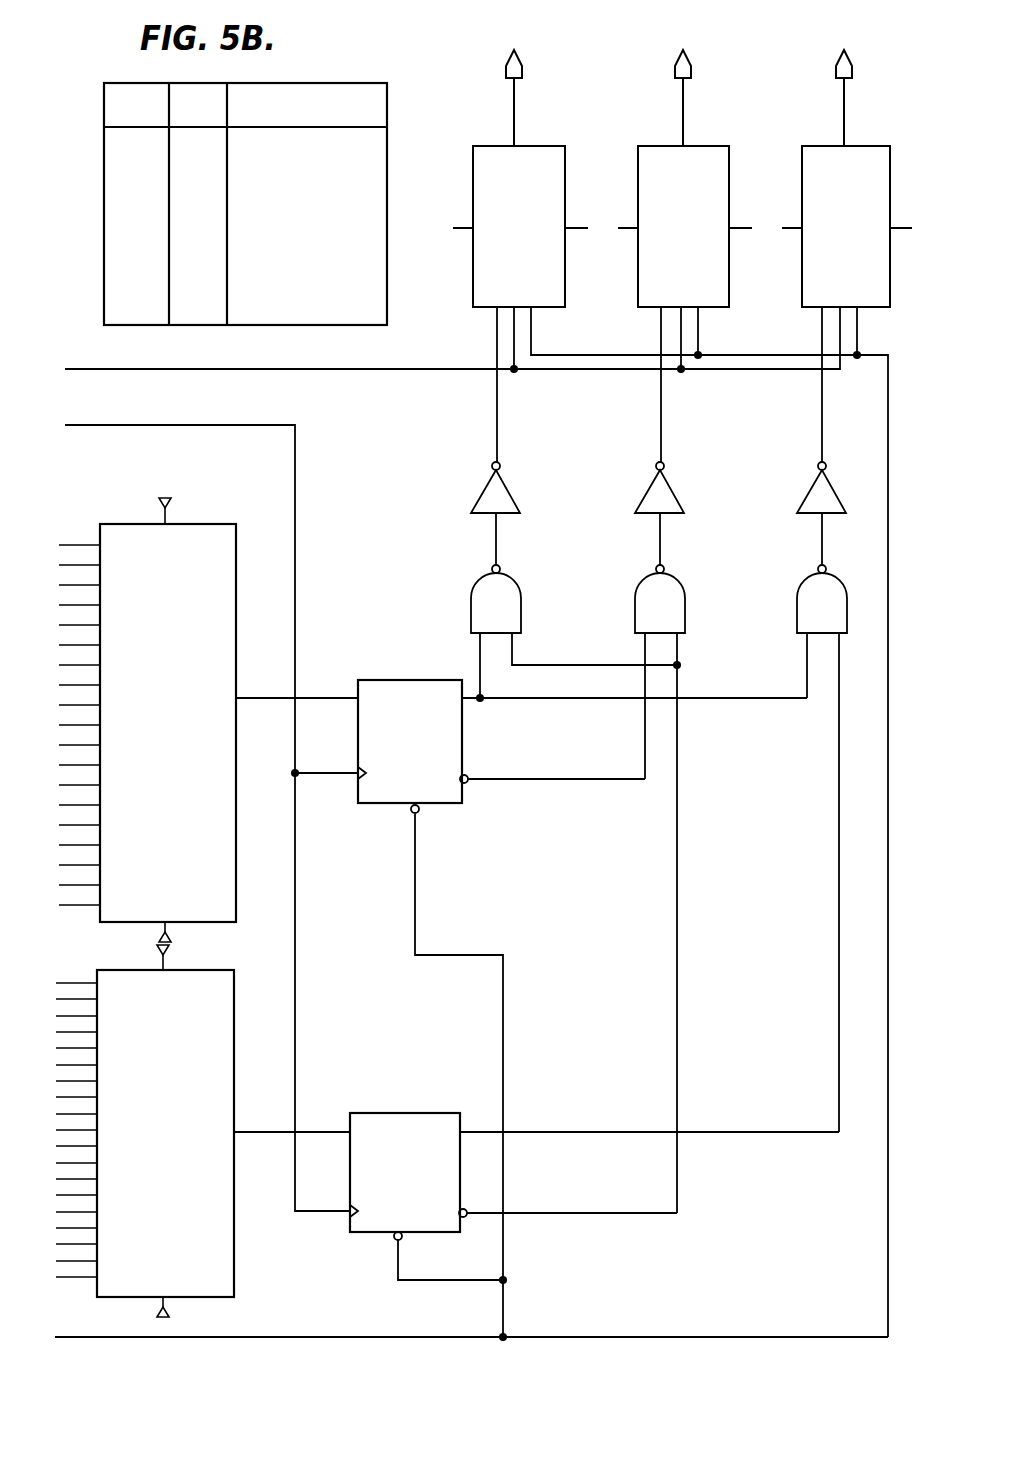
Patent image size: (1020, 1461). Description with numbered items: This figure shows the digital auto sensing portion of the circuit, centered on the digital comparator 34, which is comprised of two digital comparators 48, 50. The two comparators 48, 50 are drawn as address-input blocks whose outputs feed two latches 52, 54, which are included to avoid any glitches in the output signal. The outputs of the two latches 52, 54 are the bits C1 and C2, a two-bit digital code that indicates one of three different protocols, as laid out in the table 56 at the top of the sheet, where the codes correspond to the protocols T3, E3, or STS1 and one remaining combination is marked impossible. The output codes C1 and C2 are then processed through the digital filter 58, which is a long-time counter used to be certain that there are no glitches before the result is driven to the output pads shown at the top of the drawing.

The digital comparator 34 is at (337, 572).
The digital comparator 48 is at (147, 720).
The digital comparator 50 is at (145, 1131).
The latch 52 is at (412, 680).
The latch 54 is at (416, 1113).
The table 56 is at (389, 80).
The digital filter 58 is at (455, 249).